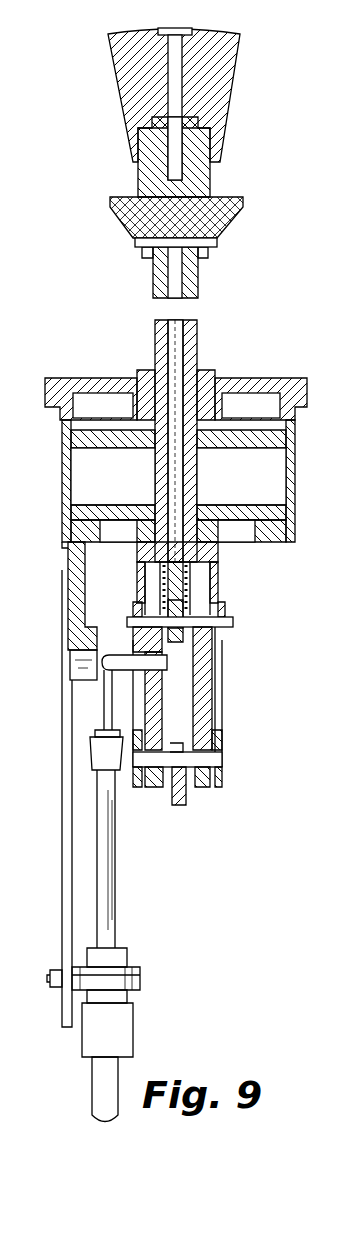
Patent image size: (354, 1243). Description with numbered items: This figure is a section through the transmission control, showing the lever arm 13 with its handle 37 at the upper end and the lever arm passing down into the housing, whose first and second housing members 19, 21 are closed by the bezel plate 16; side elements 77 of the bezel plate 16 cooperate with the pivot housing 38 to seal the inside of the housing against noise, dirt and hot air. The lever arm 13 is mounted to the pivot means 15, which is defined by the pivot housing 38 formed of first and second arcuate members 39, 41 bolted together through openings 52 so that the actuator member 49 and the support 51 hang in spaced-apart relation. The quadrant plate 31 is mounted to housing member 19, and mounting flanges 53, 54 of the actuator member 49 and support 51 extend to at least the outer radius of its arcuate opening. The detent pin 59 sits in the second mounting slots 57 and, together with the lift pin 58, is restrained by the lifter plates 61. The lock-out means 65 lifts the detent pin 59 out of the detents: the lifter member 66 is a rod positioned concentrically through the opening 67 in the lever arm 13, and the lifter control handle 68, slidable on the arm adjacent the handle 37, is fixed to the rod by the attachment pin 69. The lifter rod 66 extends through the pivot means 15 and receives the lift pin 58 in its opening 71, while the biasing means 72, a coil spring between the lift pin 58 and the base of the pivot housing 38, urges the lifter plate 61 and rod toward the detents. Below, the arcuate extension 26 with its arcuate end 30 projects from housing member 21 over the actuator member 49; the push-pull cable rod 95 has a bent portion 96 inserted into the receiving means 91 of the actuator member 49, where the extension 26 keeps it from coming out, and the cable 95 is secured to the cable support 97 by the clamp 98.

The lever arm 13 is at (160, 333).
The pivot means 15 is at (62, 482).
The bezel plate 16 is at (308, 390).
The first housing member 19 is at (297, 523).
The second housing member 21 is at (62, 522).
The arcuate extension 26 is at (70, 557).
The arcuate end 30 is at (78, 690).
The quadrant plate 31 is at (178, 808).
The handle 37 is at (220, 70).
The pivot housing 38 is at (220, 367).
The first arcuate member 39 is at (287, 446).
The second arcuate member 41 is at (82, 440).
The actuator member 49 is at (134, 640).
The support 51 is at (205, 570).
The openings 52 is at (178, 476).
The mounting flange 53 is at (148, 782).
The mounting flange 54 is at (200, 784).
The second mounting slots 57 is at (153, 738).
The lift pin 58 is at (234, 621).
The detent pin 59 is at (215, 760).
The lifter plates 61 is at (222, 708).
The lock-out means 65 is at (240, 232).
The lifter member 66 is at (186, 338).
The opening 67 is at (166, 275).
The lifter control handle 68 is at (237, 203).
The attachment pin 69 is at (220, 244).
The opening 71 is at (178, 624).
The biasing means 72 is at (160, 580).
The side elements 77 is at (112, 400).
The receiving means 91 is at (167, 673).
The push-pull cable rod 95 is at (105, 722).
The bent portion 96 is at (190, 668).
The cable support 97 is at (62, 720).
The clamp 98 is at (138, 970).